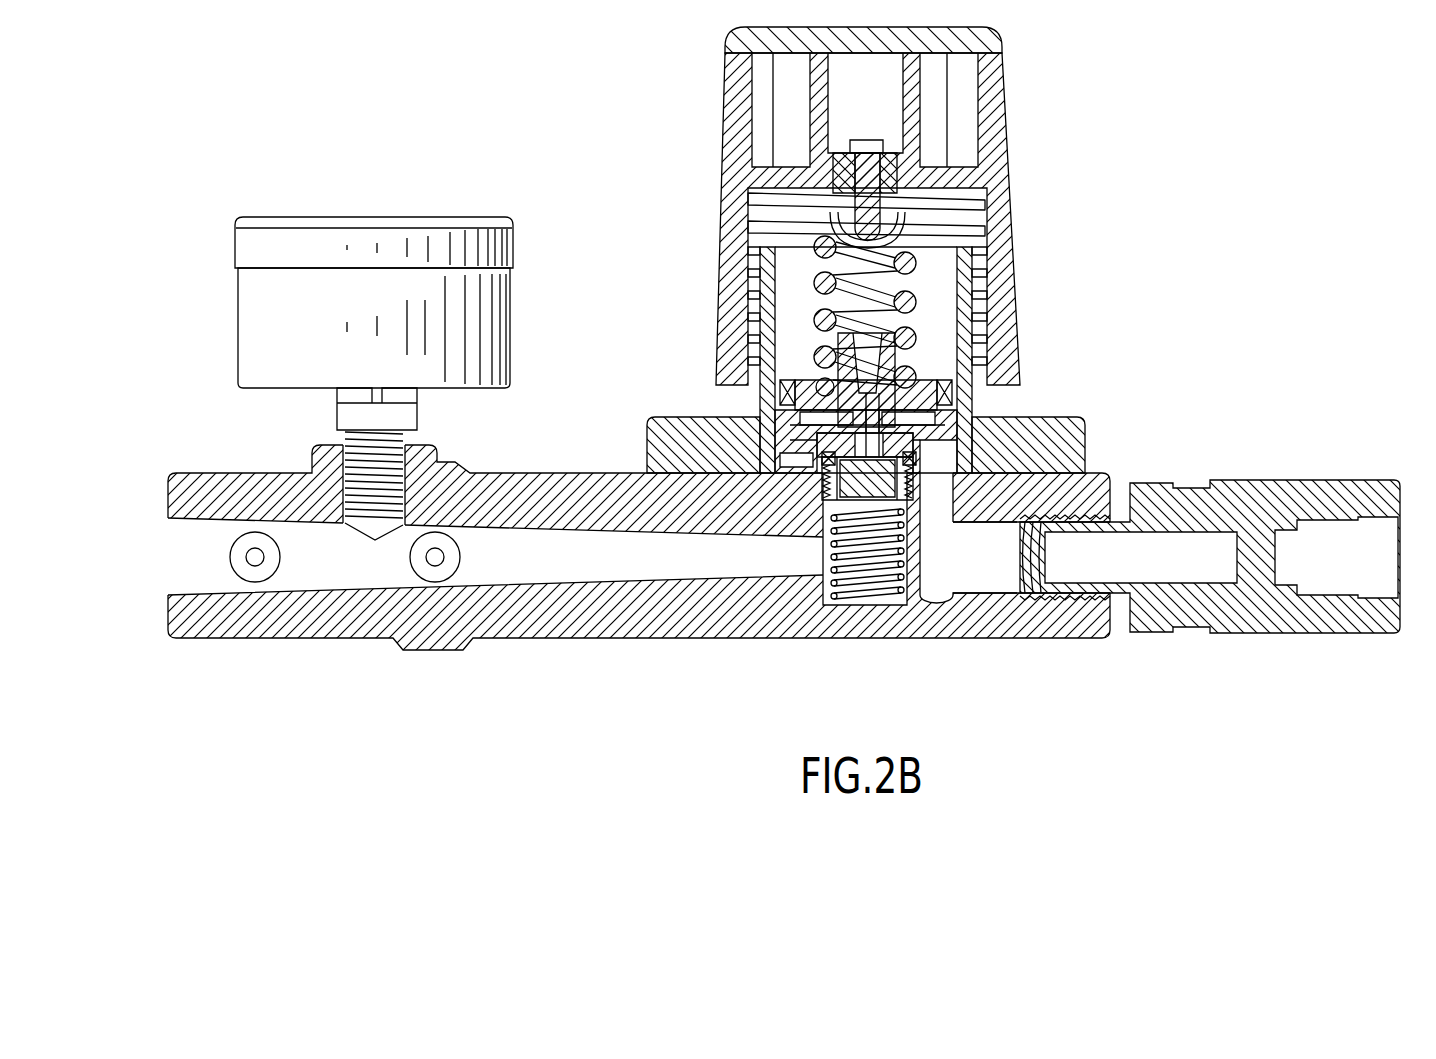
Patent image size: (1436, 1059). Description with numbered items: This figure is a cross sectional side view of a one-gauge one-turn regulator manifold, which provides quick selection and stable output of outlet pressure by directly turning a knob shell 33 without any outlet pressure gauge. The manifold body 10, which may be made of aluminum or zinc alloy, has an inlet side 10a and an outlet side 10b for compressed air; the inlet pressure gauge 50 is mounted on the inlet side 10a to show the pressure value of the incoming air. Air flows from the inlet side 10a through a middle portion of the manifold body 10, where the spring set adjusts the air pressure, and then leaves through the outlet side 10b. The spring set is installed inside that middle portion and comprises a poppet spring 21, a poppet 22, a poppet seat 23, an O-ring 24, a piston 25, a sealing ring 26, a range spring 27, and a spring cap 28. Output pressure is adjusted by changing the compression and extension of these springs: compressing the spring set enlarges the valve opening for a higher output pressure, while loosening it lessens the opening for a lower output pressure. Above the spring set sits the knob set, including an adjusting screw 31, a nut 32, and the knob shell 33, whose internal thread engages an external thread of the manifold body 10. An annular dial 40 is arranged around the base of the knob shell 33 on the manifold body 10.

The manifold body 10 is at (956, 650).
The inlet side 10a is at (628, 576).
The outlet side 10b is at (985, 578).
The poppet spring 21 is at (862, 590).
The poppet 22 is at (867, 493).
The poppet seat 23 is at (815, 440).
The O-ring 24 is at (912, 455).
The piston 25 is at (942, 372).
The sealing ring 26 is at (792, 393).
The range spring 27 is at (817, 317).
The spring cap 28 is at (813, 222).
The adjusting screw 31 is at (863, 167).
The nut 32 is at (895, 165).
The knob shell 33 is at (735, 125).
The annular dial 40 is at (1092, 436).
The inlet pressure gauge 50 is at (340, 216).